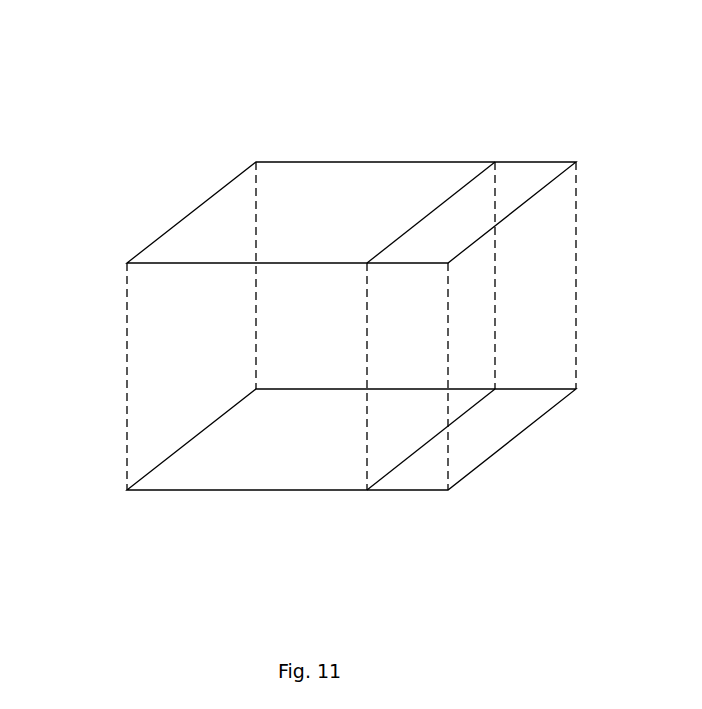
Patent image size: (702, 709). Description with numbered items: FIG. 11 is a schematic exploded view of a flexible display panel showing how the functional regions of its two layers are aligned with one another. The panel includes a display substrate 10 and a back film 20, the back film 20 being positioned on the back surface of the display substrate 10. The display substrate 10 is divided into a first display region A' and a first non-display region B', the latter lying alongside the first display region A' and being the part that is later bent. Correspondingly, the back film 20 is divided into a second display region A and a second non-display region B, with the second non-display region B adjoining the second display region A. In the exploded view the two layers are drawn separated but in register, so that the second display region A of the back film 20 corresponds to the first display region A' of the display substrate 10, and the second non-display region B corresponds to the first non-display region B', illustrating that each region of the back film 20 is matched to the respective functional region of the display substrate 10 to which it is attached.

The display substrate 10 is at (160, 200).
The back film 20 is at (112, 460).
The second display region A is at (233, 527).
The first display region A' is at (399, 128).
The second non-display region B is at (403, 550).
The first non-display region B' is at (561, 131).